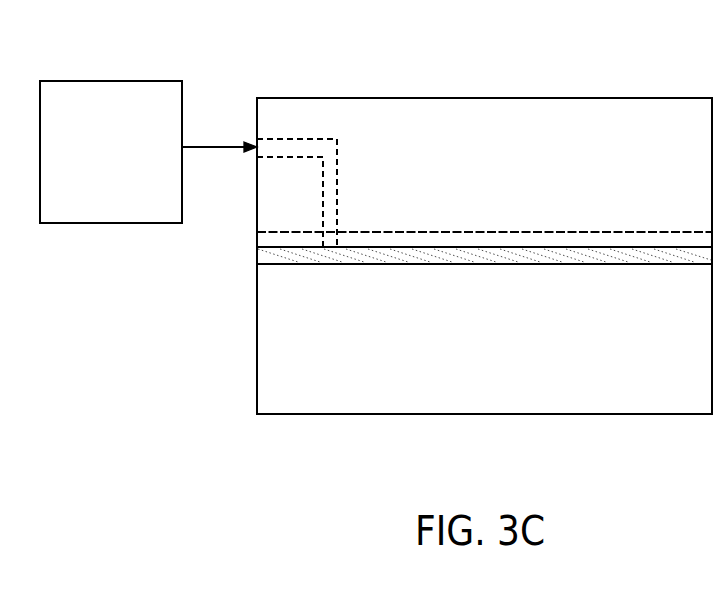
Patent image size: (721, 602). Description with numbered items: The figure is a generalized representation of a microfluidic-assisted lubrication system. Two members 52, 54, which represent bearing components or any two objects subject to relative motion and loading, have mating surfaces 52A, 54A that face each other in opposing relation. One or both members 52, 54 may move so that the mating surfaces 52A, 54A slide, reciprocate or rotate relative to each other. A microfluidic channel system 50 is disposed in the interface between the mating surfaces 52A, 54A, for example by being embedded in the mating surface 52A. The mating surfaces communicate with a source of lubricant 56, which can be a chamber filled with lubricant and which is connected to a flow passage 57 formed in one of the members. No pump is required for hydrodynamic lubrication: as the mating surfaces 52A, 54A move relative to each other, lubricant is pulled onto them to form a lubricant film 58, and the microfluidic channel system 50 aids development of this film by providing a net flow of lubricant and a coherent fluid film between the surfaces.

The microfluidic channel system 50 is at (683, 240).
The member 52 is at (515, 118).
The mating surface 52A is at (392, 247).
The member 54 is at (530, 395).
The mating surface 54A is at (433, 265).
The source of lubricant 56 is at (123, 98).
The flow passage 57 is at (293, 147).
The lubricant film 58 is at (593, 256).